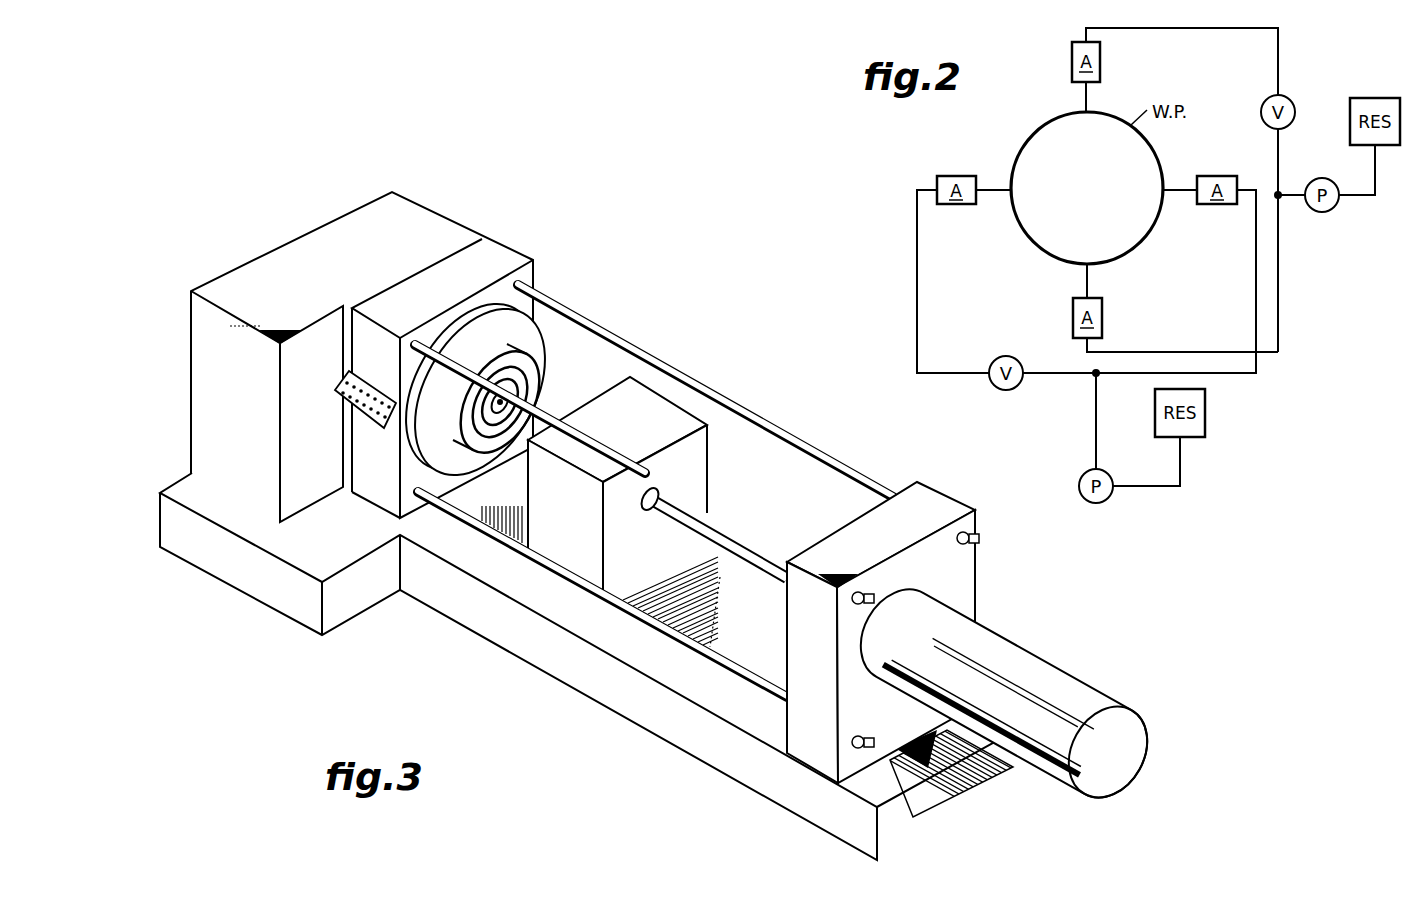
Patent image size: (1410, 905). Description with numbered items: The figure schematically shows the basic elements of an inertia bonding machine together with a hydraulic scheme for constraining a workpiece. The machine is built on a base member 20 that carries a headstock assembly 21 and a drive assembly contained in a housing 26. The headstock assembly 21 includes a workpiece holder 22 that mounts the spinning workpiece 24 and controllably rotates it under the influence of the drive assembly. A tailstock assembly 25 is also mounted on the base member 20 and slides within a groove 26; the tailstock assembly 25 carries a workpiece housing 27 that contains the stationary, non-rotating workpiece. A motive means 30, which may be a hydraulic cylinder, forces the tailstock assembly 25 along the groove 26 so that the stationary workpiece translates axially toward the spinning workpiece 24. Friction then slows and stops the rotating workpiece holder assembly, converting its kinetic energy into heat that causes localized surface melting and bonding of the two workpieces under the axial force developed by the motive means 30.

The base member 20 is at (183, 490).
The headstock assembly 21 is at (404, 188).
The workpiece holder 22 is at (440, 427).
The workpiece 24 is at (520, 462).
The tailstock assembly 25 is at (633, 345).
The housing / groove 26 is at (295, 255).
The workpiece housing 27 is at (485, 533).
The motive means 30 is at (1007, 653).